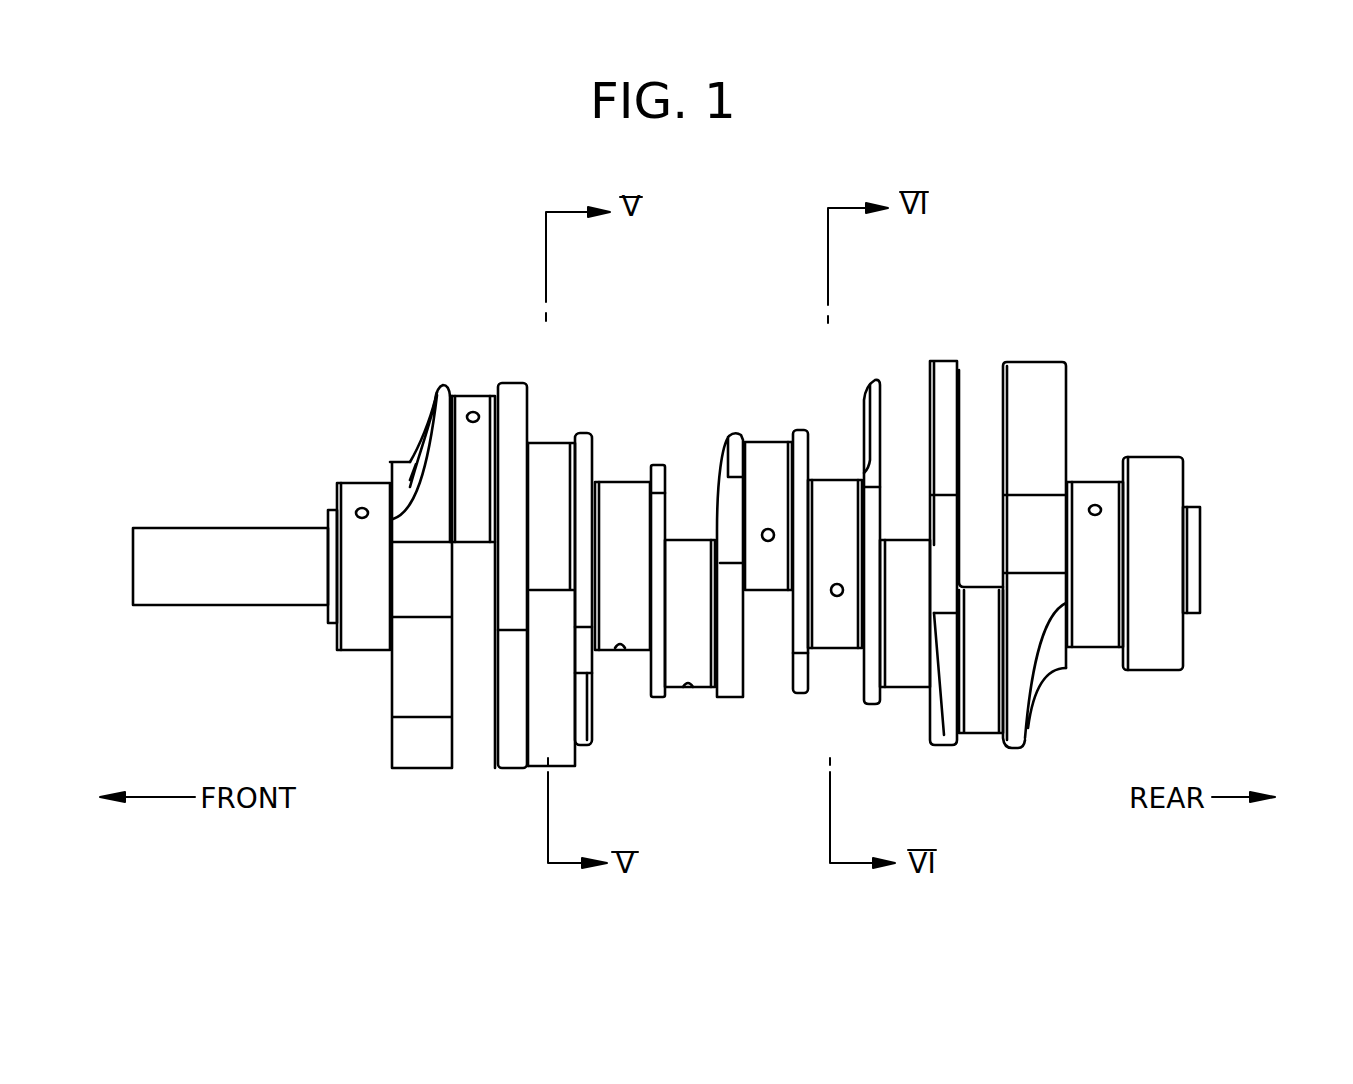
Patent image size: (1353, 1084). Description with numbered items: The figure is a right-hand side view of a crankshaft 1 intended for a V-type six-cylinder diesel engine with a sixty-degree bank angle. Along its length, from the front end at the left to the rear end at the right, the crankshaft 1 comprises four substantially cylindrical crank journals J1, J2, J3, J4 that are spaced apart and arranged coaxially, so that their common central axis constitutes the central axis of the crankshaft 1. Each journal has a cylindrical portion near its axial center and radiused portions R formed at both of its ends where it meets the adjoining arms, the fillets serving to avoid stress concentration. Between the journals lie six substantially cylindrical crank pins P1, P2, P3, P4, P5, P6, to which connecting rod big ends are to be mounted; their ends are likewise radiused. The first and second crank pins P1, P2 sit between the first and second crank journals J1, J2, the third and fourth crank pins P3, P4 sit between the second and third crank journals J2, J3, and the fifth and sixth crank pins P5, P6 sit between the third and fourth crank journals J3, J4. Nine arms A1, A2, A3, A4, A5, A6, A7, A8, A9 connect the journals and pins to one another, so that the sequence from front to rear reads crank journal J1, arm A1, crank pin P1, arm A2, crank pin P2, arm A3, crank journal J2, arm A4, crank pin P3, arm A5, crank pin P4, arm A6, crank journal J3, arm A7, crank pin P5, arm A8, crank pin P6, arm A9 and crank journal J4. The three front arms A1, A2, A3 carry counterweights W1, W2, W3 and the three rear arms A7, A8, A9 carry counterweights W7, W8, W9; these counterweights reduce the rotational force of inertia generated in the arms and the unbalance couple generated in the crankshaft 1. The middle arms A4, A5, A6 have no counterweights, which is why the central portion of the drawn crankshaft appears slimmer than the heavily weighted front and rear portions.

The crankshaft 1 is at (1232, 244).
The first crank journal J1 is at (366, 483).
The second crank journal J2 is at (648, 480).
The third crank journal J3 is at (830, 480).
The fourth crank journal J4 is at (1098, 482).
The first crank pin P1 is at (475, 396).
The second crank pin P2 is at (552, 443).
The third crank pin P3 is at (693, 690).
The fourth crank pin P4 is at (770, 442).
The fifth crank pin P5 is at (908, 689).
The sixth crank pin P6 is at (985, 735).
The counterweight W1 is at (394, 742).
The counterweight W2 is at (503, 740).
The counterweight W3 is at (572, 742).
The counterweight W7 is at (876, 380).
The counterweight W8 is at (955, 387).
The counterweight W9 is at (1067, 397).
The first arm A1 is at (428, 420).
The second arm A2 is at (527, 535).
The third arm A3 is at (625, 482).
The fourth arm A4 is at (662, 463).
The fifth arm A5 is at (738, 432).
The sixth arm A6 is at (807, 695).
The seventh arm A7 is at (875, 704).
The eighth arm A8 is at (952, 746).
The ninth arm A9 is at (1027, 724).
The radiused portion R is at (597, 655).